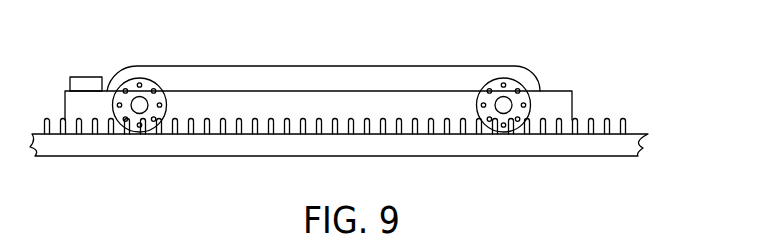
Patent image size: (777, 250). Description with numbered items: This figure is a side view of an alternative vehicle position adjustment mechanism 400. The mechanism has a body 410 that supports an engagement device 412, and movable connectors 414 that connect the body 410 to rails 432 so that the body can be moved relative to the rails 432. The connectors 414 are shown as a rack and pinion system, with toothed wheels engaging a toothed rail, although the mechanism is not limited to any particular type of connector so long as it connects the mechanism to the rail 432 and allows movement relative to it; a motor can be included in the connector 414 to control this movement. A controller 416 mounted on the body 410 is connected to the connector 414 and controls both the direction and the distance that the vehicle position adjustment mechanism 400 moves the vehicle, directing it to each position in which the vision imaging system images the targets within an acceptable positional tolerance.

The vehicle position adjustment mechanism 400 is at (514, 50).
The body 410 is at (563, 89).
The engagement device 412 is at (530, 66).
The movable connectors 414 is at (150, 86).
The controller 416 is at (67, 91).
The rails 432 is at (648, 135).